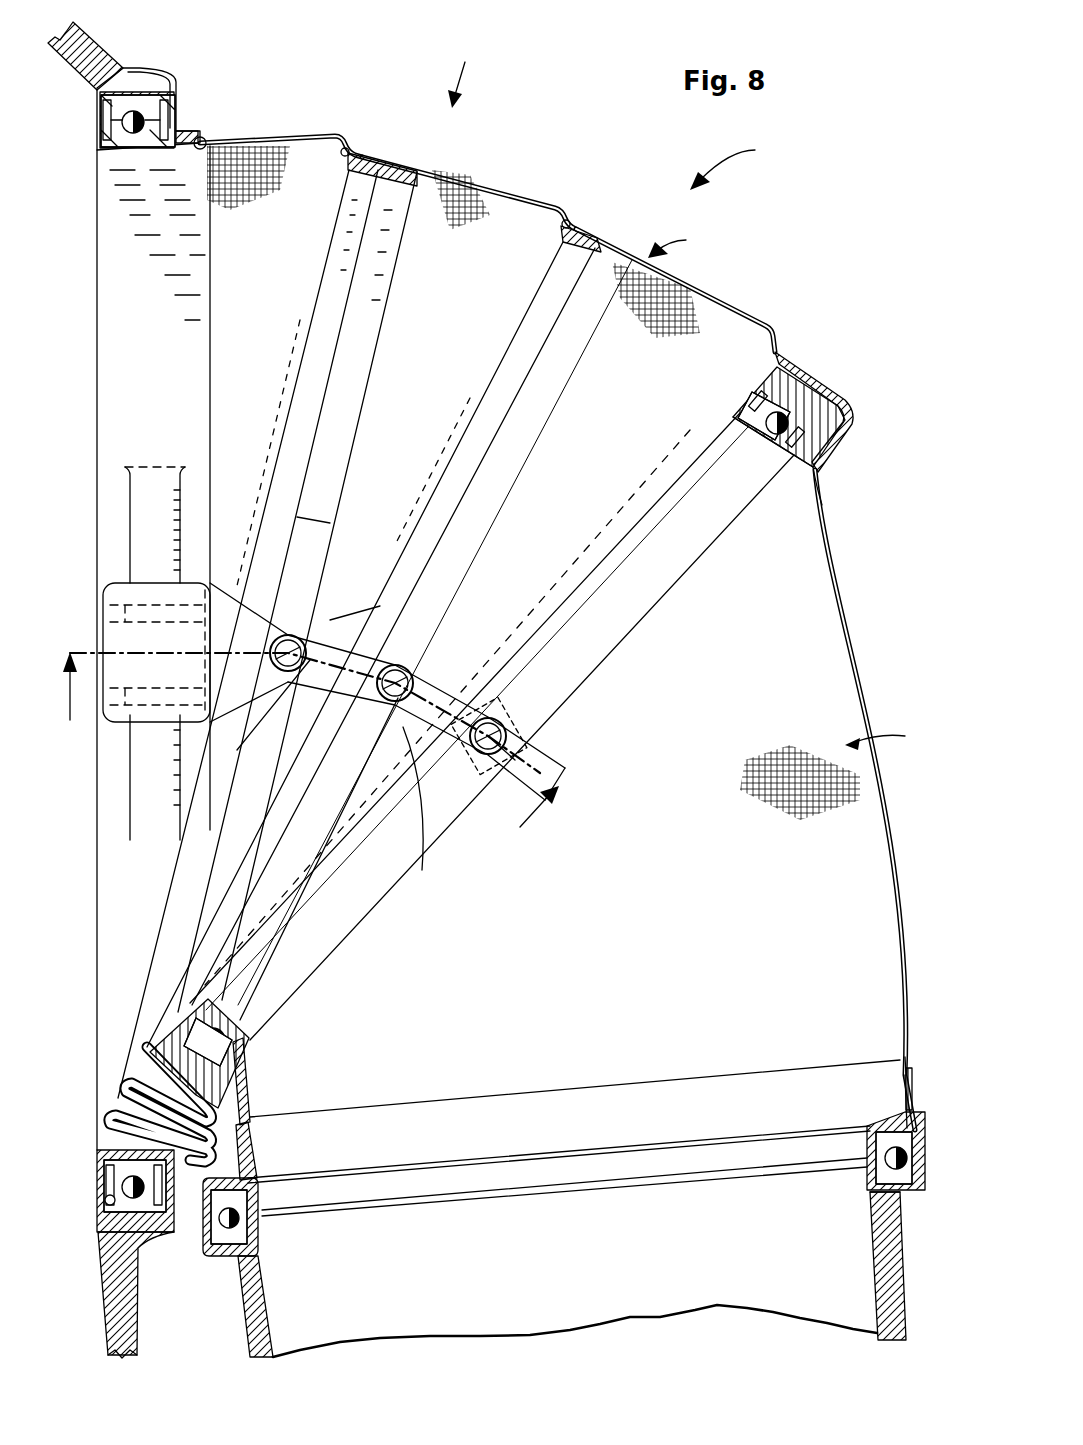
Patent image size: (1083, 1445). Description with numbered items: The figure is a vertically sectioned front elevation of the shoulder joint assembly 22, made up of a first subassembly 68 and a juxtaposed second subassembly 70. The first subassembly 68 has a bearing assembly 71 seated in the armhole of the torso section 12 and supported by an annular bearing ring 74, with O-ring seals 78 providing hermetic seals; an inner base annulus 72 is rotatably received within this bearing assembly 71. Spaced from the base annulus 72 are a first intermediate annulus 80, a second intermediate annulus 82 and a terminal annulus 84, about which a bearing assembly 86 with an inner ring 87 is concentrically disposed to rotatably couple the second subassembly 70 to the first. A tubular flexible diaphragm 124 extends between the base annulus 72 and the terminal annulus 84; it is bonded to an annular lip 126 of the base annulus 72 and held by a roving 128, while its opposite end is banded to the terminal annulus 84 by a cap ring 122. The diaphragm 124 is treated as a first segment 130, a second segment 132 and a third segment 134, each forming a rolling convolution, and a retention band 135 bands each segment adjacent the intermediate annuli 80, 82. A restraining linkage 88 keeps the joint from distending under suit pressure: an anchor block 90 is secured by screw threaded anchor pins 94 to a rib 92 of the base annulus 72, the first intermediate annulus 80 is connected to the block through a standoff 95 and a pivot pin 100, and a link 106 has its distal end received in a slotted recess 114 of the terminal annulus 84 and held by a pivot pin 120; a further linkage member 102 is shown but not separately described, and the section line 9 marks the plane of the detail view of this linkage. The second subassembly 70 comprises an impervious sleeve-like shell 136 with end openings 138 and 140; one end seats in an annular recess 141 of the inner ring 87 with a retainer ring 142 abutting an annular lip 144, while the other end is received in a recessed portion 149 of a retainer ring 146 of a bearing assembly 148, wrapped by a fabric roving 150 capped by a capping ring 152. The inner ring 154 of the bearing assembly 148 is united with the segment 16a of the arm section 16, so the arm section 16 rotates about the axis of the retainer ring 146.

The torso section 12 is at (90, 45).
The arm section 16 is at (888, 1272).
The segment of the arm section 16a is at (883, 1237).
The shoulder joint assembly 22 is at (740, 163).
The first subassembly 68 is at (472, 71).
The second subassembly 70 is at (893, 734).
The bearing assembly 71 is at (97, 128).
The inner base annulus 72 is at (117, 242).
The annular bearing ring 74 is at (180, 100).
The O-ring seals 78 is at (112, 85).
The first intermediate annulus 80 is at (372, 362).
The second intermediate annulus 82 is at (527, 433).
The terminal annulus 84 is at (812, 410).
The bearing assembly 86 is at (812, 436).
The inner ring 87 is at (800, 470).
The restraining linkage 88 is at (470, 622).
The anchor block 90 is at (226, 580).
The rib 92 is at (135, 525).
The screw threaded anchor pins 94 is at (122, 605).
The standoff 95 is at (322, 545).
The pivot pin 100 is at (278, 648).
The link arm 102 is at (332, 625).
The link 106 is at (445, 818).
The slotted recess 114 is at (506, 706).
The pivot pin 120 is at (540, 727).
The cap ring 122 is at (790, 375).
The flexible diaphragm 124 is at (693, 241).
The annular lip 126 is at (205, 140).
The roving 128 is at (188, 131).
The first segment 130 is at (290, 138).
The second segment 132 is at (498, 186).
The third segment 134 is at (718, 285).
The retention band 135 is at (346, 146).
The impervious shell 136 is at (882, 835).
The end opening 138 is at (663, 577).
The end opening 140 is at (522, 1102).
The annular recess 141 is at (805, 485).
The retainer ring 142 is at (355, 908).
The annular lip 144 is at (660, 490).
The retainer ring 146 is at (660, 1095).
The bearing assembly 148 is at (208, 1252).
The recessed portion 149 is at (252, 1155).
The fabric roving 150 is at (910, 1075).
The capping ring 152 is at (912, 1092).
The inner ring 154 is at (700, 1162).
The section line 9 is at (309, 752).